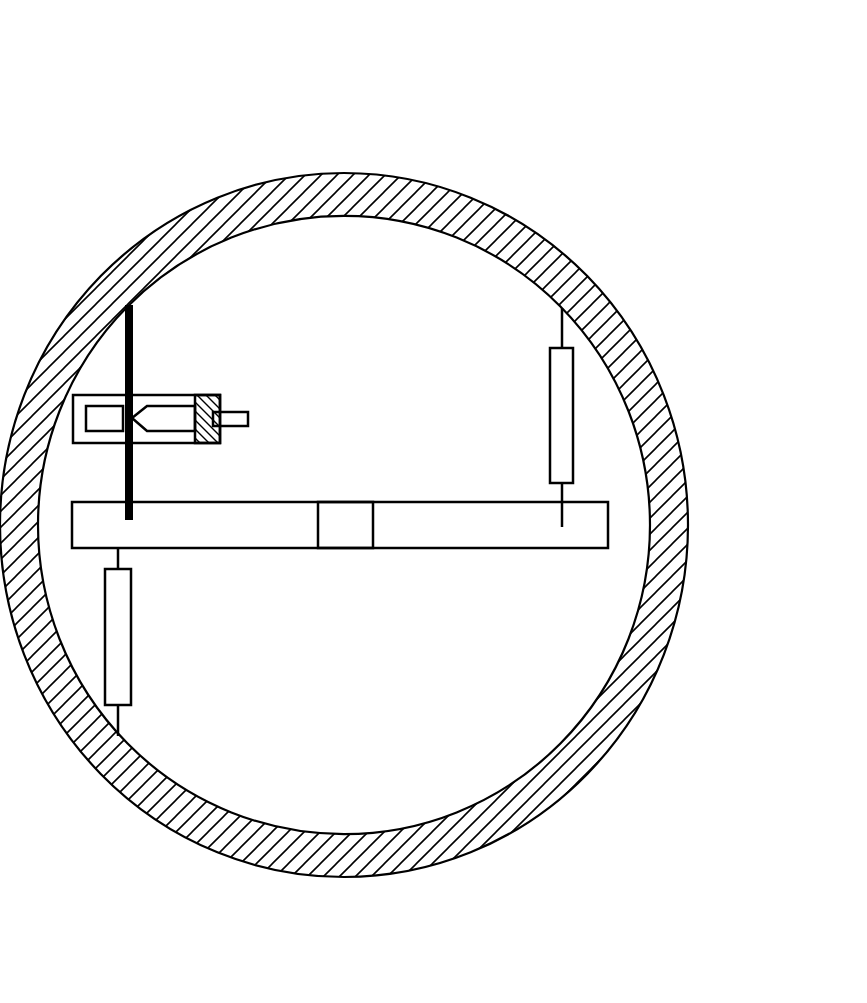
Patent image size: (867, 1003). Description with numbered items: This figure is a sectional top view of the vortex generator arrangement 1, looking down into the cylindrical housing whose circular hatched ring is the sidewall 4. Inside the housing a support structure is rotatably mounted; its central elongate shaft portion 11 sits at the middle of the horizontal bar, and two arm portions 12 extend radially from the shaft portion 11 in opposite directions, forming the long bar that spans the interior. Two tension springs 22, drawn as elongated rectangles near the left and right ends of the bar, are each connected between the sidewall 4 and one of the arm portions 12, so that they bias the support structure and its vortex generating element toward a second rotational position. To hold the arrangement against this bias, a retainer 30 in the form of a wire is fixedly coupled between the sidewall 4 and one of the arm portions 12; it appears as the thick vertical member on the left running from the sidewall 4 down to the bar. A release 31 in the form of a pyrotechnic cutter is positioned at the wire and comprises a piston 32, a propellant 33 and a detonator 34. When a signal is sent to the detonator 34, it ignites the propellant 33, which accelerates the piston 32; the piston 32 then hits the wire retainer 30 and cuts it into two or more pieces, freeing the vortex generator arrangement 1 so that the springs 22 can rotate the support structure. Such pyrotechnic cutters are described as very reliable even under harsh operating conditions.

The vortex generator arrangement 1 is at (164, 104).
The sidewall 4 is at (505, 228).
The shaft portion 11 is at (342, 515).
The arm portions 12 is at (465, 520).
The tension springs 22 is at (562, 373).
The retainer 30 is at (133, 330).
The release 31 is at (233, 447).
The piston 32 is at (160, 420).
The propellant 33 is at (202, 397).
The detonator 34 is at (227, 410).